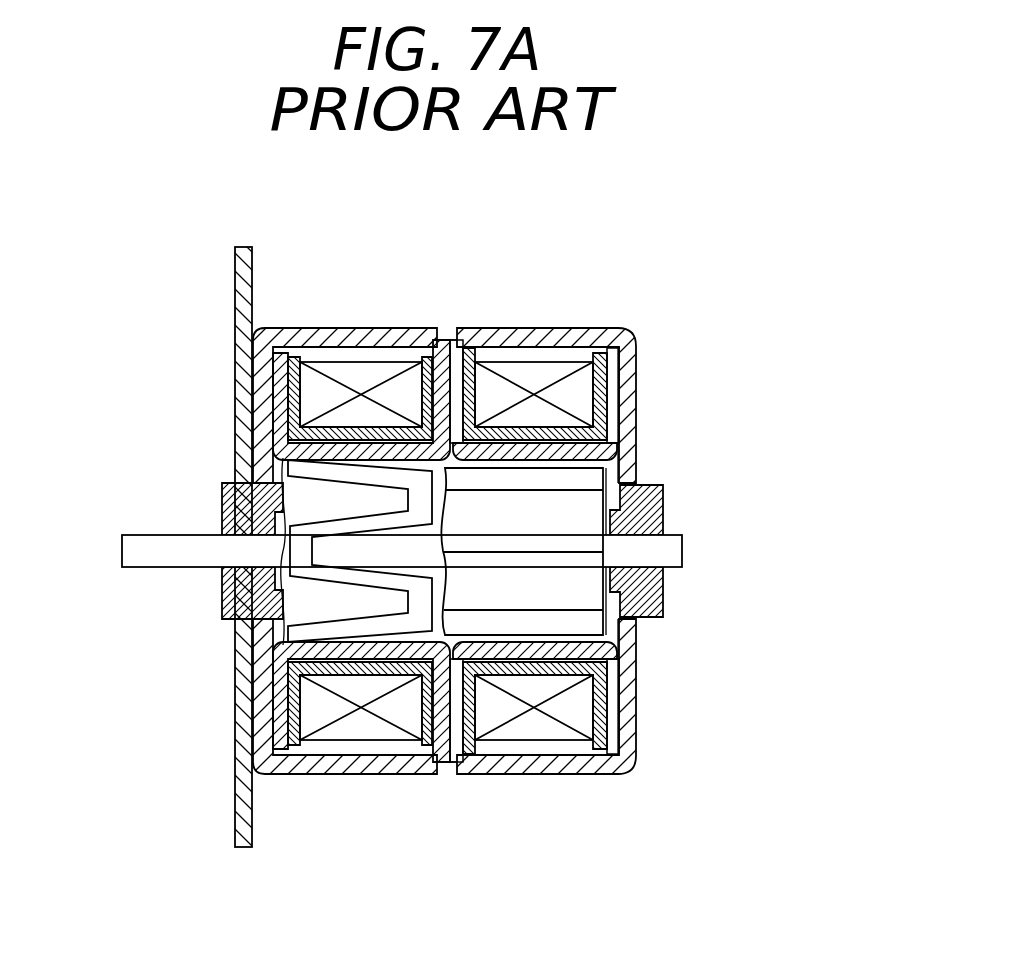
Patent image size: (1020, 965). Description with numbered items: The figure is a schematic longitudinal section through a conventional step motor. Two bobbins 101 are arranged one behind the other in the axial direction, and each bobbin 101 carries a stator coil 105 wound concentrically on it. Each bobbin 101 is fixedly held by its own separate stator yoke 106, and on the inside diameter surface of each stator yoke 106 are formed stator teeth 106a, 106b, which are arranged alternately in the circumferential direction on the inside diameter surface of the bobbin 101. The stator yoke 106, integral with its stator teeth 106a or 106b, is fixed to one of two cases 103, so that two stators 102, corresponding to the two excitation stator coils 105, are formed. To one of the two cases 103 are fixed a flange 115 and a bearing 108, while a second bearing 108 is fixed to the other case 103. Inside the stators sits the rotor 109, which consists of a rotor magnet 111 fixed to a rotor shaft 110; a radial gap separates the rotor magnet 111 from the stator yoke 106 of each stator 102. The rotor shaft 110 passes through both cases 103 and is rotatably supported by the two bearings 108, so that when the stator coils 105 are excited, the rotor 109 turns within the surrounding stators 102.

The bobbin 101 is at (446, 474).
The stator 102 is at (475, 499).
The case 103 is at (252, 340).
The stator coil 105 is at (340, 372).
The stator yoke 106 is at (272, 348).
The stator tooth 106a is at (303, 603).
The stator tooth 106b is at (318, 552).
The bearing 108 is at (222, 487).
The rotor 109 is at (622, 483).
The rotor shaft 110 is at (130, 551).
The rotor magnet 111 is at (573, 597).
The flange 115 is at (234, 250).